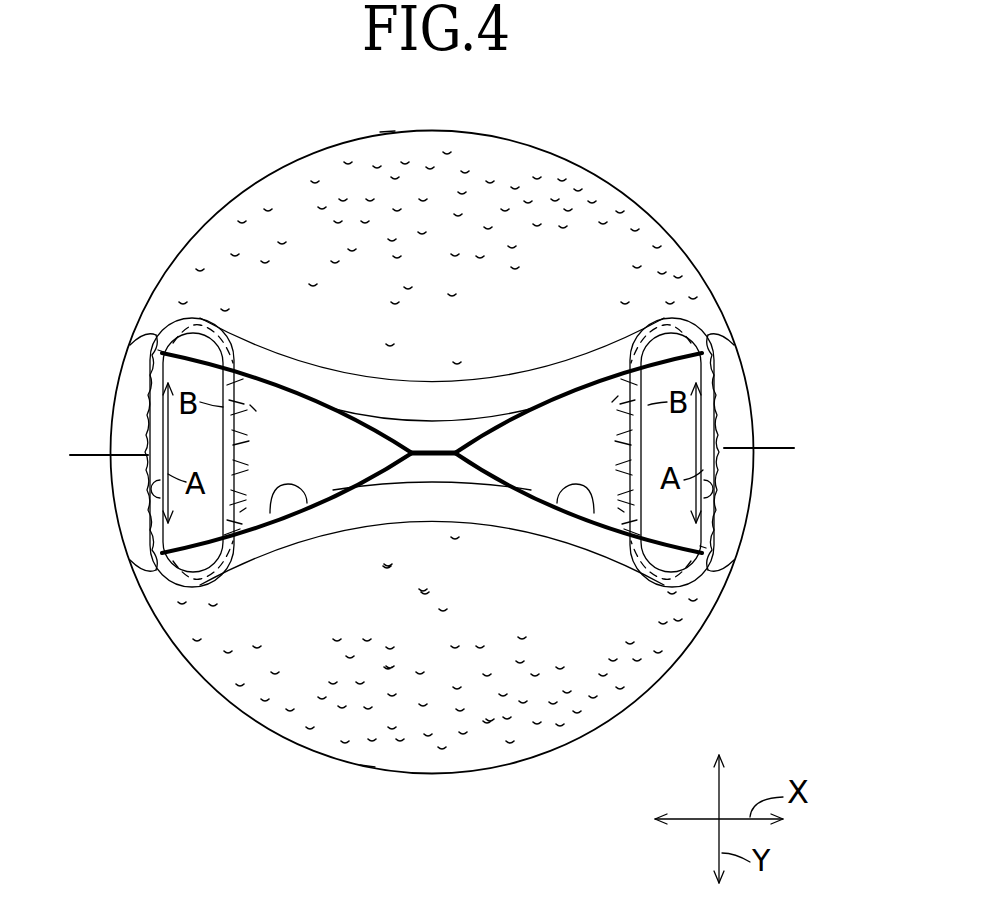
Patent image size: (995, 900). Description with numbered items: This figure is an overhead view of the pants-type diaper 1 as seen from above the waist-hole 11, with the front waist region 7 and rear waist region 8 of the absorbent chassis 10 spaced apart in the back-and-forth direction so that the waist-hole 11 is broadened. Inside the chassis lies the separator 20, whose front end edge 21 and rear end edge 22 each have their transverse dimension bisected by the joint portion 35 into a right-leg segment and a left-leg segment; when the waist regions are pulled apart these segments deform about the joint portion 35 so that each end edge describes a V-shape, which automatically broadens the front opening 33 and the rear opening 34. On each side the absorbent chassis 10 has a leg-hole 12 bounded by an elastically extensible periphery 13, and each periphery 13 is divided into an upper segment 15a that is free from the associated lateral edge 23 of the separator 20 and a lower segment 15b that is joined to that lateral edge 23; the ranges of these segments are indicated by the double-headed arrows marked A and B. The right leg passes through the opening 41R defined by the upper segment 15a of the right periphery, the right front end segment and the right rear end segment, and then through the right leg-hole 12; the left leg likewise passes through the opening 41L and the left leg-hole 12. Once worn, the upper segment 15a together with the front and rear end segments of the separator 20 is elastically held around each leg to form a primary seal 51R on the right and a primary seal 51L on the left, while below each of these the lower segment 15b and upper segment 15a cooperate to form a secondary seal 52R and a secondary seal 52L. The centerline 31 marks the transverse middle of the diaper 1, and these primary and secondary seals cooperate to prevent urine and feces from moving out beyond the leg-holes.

The diaper 1 is at (722, 103).
The front waist region 7 is at (367, 772).
The rear waist region 8 is at (384, 132).
The absorbent chassis 10 is at (670, 227).
The waist-hole 11 is at (294, 203).
The leg-hole 12 is at (150, 350).
The periphery of leg-hole 13 is at (155, 552).
The upper segment 15a is at (140, 413).
The lower segment 15b is at (243, 513).
The separator 20 is at (583, 347).
The front end edge of separator 21 is at (370, 487).
The rear end edge of separator 22 is at (360, 417).
The lateral edge of separator 23 is at (240, 437).
The center line 31 is at (427, 350).
The front opening 33 is at (413, 500).
The rear opening 34 is at (535, 392).
The joint portion 35 is at (433, 447).
The opening for the right leg 41R is at (253, 410).
The opening for the left leg 41L is at (615, 400).
The primary seal for the right leg 51R is at (305, 505).
The primary seal for the left leg 51L is at (562, 505).
The secondary seal for the right leg 52R is at (148, 492).
The secondary seal for the left leg 52L is at (720, 497).